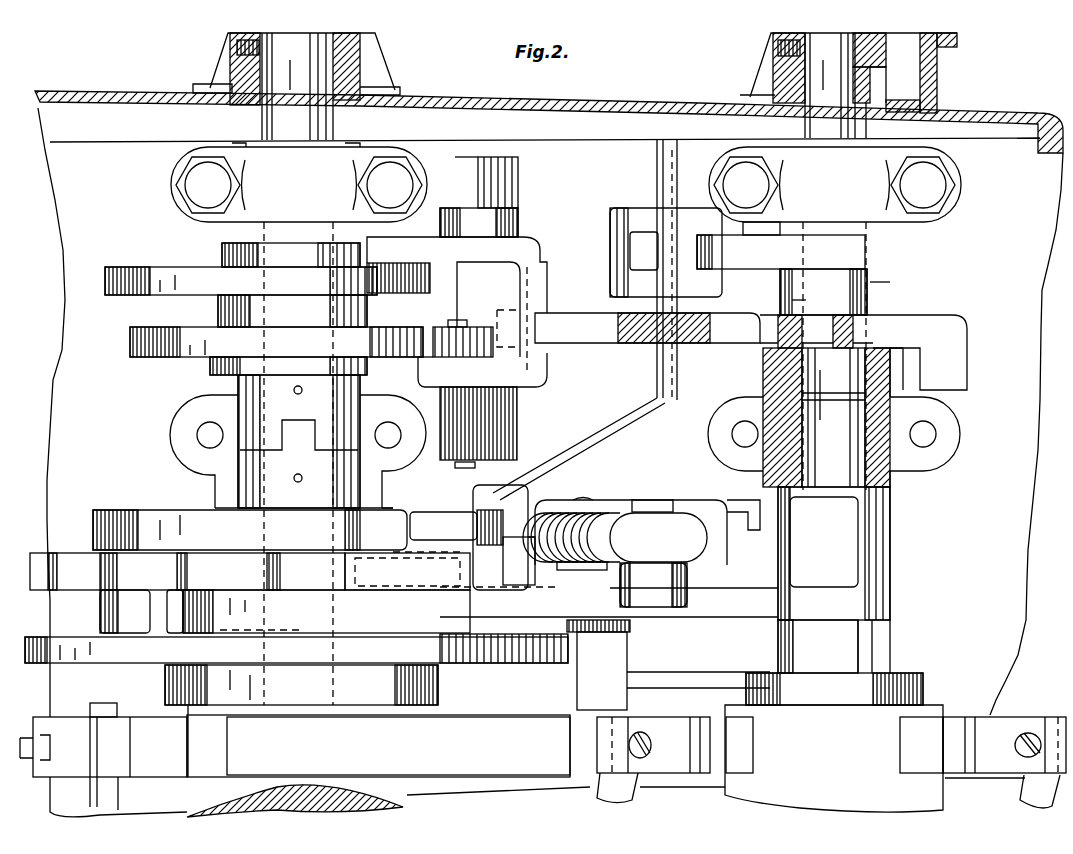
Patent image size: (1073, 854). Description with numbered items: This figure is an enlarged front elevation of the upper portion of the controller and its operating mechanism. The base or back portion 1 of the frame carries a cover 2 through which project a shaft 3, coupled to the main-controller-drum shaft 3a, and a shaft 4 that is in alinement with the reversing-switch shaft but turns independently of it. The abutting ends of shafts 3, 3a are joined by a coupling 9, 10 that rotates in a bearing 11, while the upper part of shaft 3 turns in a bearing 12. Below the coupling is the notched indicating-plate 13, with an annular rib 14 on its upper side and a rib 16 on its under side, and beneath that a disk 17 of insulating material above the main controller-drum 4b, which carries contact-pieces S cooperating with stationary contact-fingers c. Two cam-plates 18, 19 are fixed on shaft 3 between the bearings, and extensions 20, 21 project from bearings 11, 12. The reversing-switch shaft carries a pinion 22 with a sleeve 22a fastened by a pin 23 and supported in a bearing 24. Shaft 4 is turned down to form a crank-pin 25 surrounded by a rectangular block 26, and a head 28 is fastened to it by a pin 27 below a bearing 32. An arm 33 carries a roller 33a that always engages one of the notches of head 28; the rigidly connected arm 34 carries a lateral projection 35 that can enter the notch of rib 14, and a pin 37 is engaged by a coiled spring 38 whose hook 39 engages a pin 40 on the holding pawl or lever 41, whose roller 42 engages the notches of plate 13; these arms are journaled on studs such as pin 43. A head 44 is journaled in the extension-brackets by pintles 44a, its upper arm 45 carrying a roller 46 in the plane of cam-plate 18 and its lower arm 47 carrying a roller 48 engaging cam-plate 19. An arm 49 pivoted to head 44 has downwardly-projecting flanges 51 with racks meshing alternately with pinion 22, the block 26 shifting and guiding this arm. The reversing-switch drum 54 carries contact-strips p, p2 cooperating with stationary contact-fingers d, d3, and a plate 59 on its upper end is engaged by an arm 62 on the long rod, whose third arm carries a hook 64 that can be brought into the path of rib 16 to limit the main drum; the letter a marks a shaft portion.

The base or back portion of the frame 1 is at (550, 462).
The cover 2 is at (620, 106).
The shaft 3 is at (296, 369).
The main-controller-drum shaft 3a is at (213, 510).
The shaft 4 is at (848, 261).
The main controller-drum 4b is at (201, 741).
The coupling 9 is at (299, 441).
The coupling 10 is at (299, 451).
The bearing 11 is at (204, 451).
The bearing 12 is at (299, 182).
The notched indicating-plate 13 is at (187, 571).
The annular rib 14 is at (276, 531).
The rib 16 is at (285, 611).
The disk of insulating material 17 is at (296, 669).
The cam-plate 18 is at (241, 285).
The cam-plate 19 is at (276, 351).
The extension 20 is at (438, 447).
The extension 21 is at (406, 185).
The pinion 22 is at (933, 395).
The sleeve 22a is at (890, 478).
The pin 23 is at (833, 417).
The bearing 24 is at (925, 434).
The crank-pin 25 is at (800, 306).
The rectangular block 26 is at (816, 417).
The pin 27 is at (890, 290).
The head 28 is at (782, 268).
The bearing 32 is at (835, 184).
The arm 33 is at (666, 252).
The roller 33a is at (675, 245).
The arm 34 is at (585, 320).
The lateral projection 35 is at (472, 536).
The pin 37 is at (584, 498).
The coiled spring 38 is at (622, 584).
The hook 39 is at (615, 537).
The pin 40 is at (660, 497).
The holding pawl or lever 41 is at (665, 580).
The roller 42 is at (407, 571).
The pin or stud 43 is at (752, 508).
The head 44 is at (457, 312).
The pintles 44a is at (520, 162).
The upper arm or extension 45 is at (471, 231).
The roller 46 is at (409, 278).
The lower arm 47 is at (461, 371).
The roller 48 is at (448, 323).
The arm 49 is at (704, 330).
The downwardly-projecting flanges 51 is at (958, 362).
The drum 54 is at (834, 758).
The plate 59 is at (834, 689).
The arm 62 is at (720, 678).
The hook 64 is at (632, 628).
The shaft portion a is at (823, 417).
The stationary contact-finger c is at (103, 756).
The contact-piece S is at (378, 766).
The contact-strip p is at (739, 745).
The contact-strip p2 is at (921, 745).
The stationary contact-finger d is at (1004, 762).
The stationary contact-finger d3 is at (653, 760).